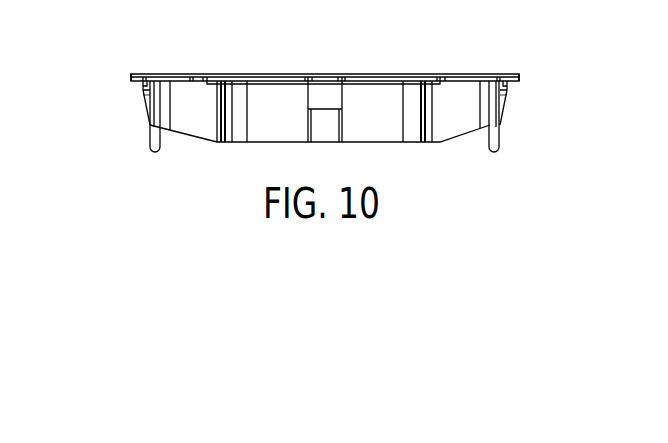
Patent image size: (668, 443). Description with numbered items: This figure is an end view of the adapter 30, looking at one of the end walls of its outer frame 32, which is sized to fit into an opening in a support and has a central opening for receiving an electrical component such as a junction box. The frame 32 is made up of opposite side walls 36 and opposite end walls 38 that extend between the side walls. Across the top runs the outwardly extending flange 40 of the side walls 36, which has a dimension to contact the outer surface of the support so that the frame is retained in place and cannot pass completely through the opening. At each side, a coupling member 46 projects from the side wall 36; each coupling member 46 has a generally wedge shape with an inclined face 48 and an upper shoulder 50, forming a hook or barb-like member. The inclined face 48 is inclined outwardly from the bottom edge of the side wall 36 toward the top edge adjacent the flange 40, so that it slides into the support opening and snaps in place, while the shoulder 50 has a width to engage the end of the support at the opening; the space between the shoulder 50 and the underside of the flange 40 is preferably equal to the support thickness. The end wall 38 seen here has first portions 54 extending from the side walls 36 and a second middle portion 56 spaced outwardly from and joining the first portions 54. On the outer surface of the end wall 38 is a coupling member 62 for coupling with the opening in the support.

The adapter 30 is at (528, 50).
The outer frame 32 is at (532, 70).
The side wall 36 is at (147, 126).
The end wall 38 is at (380, 147).
The outwardly extending flange 40 is at (131, 77).
The coupling member 46 is at (136, 102).
The inclined face 48 is at (145, 110).
The upper shoulder 50 is at (143, 87).
The first portion 54 is at (193, 113).
The second middle portion 56 is at (268, 107).
The coupling member 62 is at (300, 103).